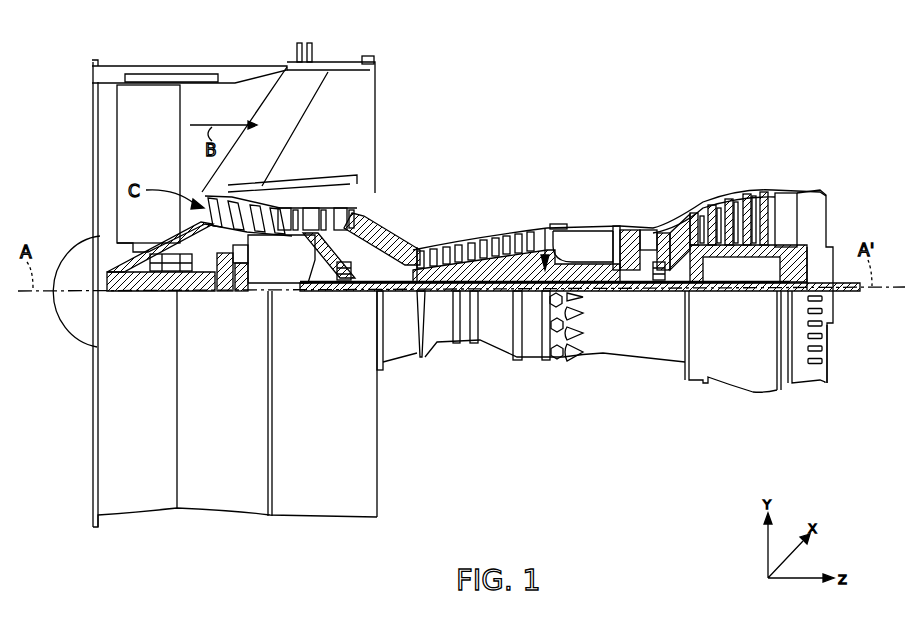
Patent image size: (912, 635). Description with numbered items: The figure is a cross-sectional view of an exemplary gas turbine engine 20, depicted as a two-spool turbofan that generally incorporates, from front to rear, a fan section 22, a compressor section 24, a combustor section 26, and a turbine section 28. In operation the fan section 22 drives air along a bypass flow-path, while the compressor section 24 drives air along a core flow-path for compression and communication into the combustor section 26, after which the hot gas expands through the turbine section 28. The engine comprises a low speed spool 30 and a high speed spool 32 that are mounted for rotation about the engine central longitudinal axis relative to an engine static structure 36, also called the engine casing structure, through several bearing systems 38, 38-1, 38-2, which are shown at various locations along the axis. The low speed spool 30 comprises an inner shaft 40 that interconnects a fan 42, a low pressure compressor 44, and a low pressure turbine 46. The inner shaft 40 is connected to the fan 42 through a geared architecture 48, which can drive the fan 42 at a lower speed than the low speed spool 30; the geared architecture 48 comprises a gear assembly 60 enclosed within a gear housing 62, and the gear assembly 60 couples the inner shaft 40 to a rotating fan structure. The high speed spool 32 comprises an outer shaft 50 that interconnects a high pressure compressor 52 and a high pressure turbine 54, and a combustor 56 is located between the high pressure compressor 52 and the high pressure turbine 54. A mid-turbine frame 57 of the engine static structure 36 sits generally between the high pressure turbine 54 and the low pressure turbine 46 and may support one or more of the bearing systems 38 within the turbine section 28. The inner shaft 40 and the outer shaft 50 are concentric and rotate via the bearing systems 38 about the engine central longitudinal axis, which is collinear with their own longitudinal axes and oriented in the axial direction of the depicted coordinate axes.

The gas turbine engine 20 is at (623, 82).
The fan section 22 is at (265, 52).
The compressor section 24 is at (272, 146).
The combustor section 26 is at (625, 146).
The turbine section 28 is at (782, 146).
The low speed spool 30 is at (499, 306).
The high speed spool 32 is at (545, 228).
The engine static structure 36 is at (652, 350).
The bearing system 38 is at (660, 291).
The bearing system 38-1 is at (153, 292).
The bearing system 38-2 is at (345, 288).
The inner shaft 40 is at (391, 292).
The fan 42 is at (157, 160).
The low pressure compressor 44 is at (326, 218).
The low pressure turbine 46 is at (730, 208).
The geared architecture 48 is at (243, 304).
The outer shaft 50 is at (585, 287).
The high pressure compressor 52 is at (470, 240).
The high pressure turbine 54 is at (640, 224).
The combustor 56 is at (585, 237).
The mid-turbine frame 57 is at (660, 235).
The gear assembly 60 is at (248, 273).
The gear housing 62 is at (243, 247).